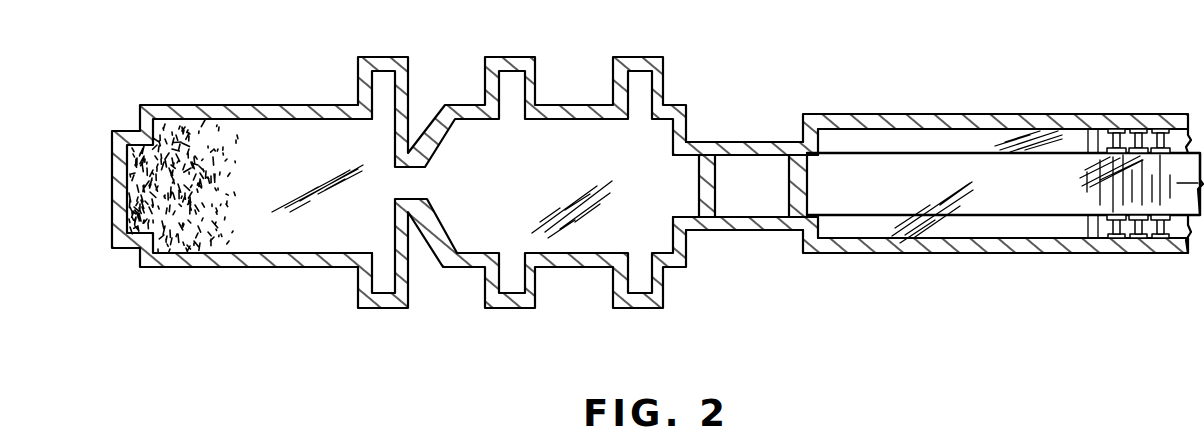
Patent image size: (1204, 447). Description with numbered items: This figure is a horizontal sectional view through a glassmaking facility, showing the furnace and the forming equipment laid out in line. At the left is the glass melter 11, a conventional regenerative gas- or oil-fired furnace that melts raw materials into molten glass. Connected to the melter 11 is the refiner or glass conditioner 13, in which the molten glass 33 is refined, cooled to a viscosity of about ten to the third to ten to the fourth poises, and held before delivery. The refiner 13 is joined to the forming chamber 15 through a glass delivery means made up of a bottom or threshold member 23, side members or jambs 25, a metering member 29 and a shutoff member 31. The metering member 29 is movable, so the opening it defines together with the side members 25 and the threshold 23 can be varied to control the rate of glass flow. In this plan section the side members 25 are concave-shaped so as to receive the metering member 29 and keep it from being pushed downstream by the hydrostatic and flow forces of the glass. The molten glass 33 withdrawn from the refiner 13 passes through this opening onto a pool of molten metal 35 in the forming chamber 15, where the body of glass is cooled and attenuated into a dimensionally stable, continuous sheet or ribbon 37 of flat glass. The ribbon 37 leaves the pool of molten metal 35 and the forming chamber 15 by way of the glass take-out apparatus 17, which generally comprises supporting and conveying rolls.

The glass melter 11 is at (267, 92).
The refiner 13 is at (573, 90).
The forming chamber 15 is at (964, 102).
The glass take-out apparatus 17 is at (1117, 99).
The threshold member 23 is at (747, 183).
The side members 25 is at (825, 143).
The metering member 29 is at (808, 183).
The shutoff member 31 is at (703, 191).
The molten glass 33 is at (572, 181).
The pool of molten metal 35 is at (981, 149).
The sheet or ribbon of flat glass 37 is at (1043, 196).